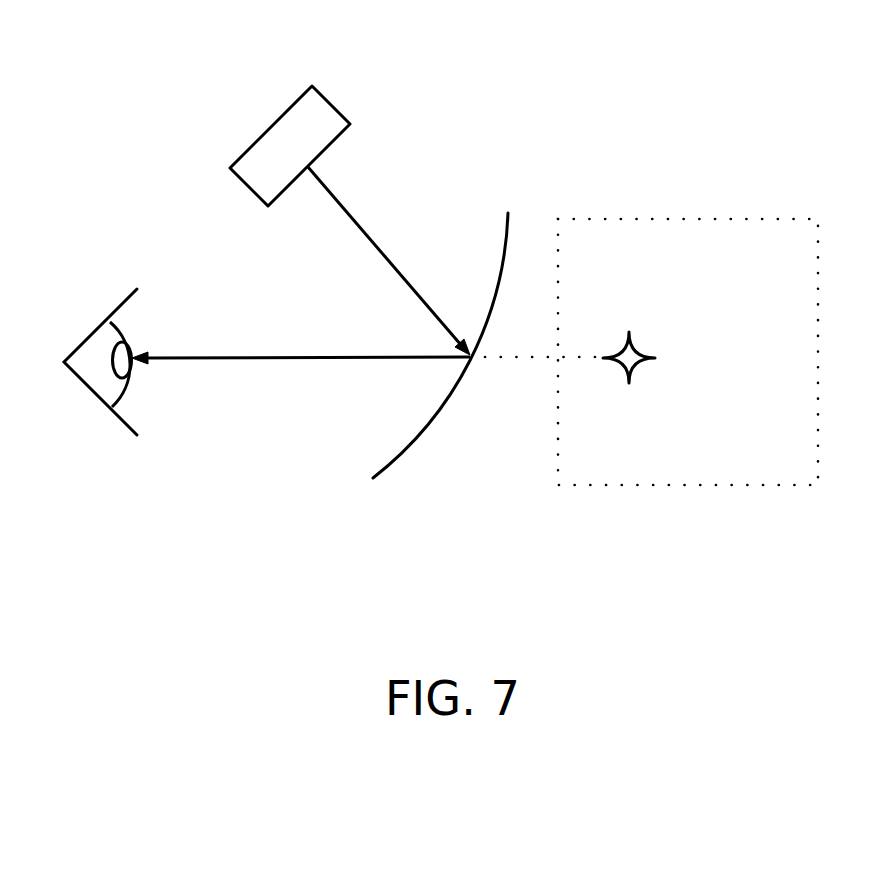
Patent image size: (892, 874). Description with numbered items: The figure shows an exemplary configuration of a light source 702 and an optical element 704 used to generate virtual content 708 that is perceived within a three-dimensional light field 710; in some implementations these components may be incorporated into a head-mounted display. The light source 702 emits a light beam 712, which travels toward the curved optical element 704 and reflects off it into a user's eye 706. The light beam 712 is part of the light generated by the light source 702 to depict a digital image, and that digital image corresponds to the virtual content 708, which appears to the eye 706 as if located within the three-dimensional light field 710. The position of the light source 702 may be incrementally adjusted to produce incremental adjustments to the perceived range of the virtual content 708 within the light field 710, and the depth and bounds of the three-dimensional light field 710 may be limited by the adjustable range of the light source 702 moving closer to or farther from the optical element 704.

The light source 702 is at (327, 98).
The optical element 704 is at (428, 427).
The user's eye 706 is at (122, 348).
The virtual content 708 is at (629, 335).
The three-dimensional light field 710 is at (657, 220).
The light beam 712 is at (350, 212).